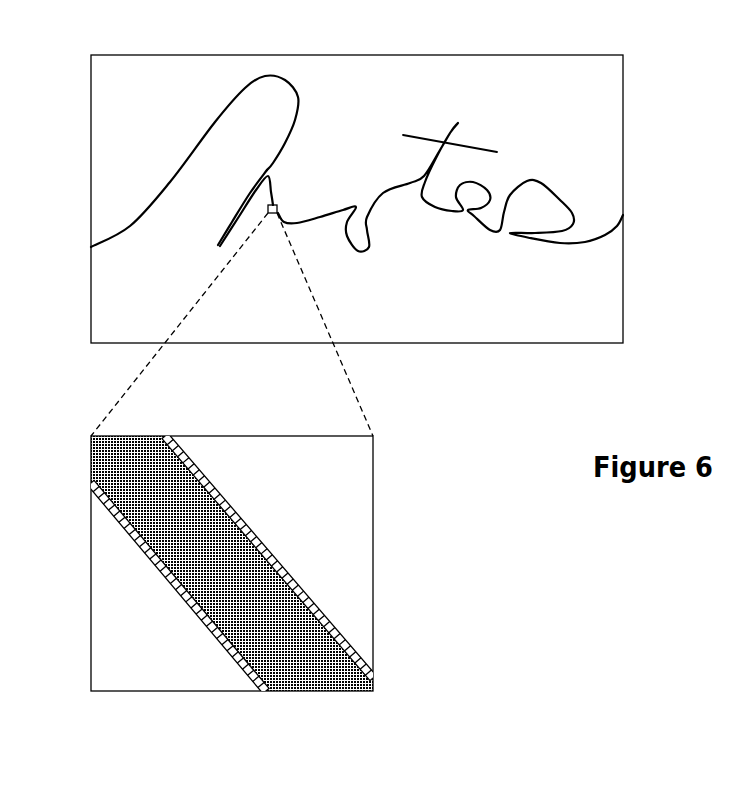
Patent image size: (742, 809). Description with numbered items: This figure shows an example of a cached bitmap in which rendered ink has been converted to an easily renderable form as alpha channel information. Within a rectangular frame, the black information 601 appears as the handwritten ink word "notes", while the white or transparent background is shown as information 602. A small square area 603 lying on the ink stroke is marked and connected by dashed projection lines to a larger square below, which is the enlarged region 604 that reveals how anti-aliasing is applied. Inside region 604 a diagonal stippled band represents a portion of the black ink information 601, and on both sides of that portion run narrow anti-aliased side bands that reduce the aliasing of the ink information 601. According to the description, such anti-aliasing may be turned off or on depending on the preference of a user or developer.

The information 601 is at (573, 225).
The information 602 is at (592, 295).
The area 603 is at (277, 205).
The region 604 is at (373, 484).